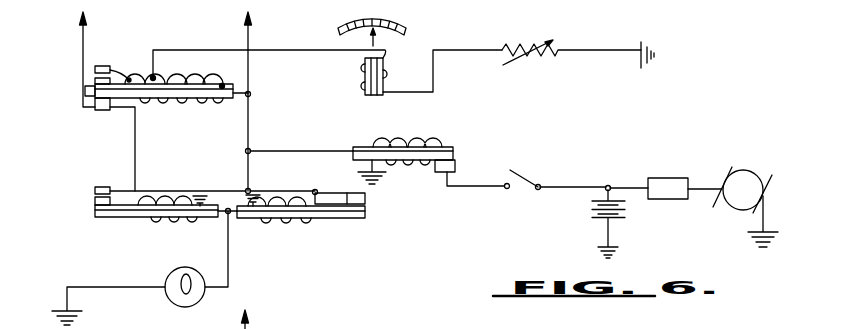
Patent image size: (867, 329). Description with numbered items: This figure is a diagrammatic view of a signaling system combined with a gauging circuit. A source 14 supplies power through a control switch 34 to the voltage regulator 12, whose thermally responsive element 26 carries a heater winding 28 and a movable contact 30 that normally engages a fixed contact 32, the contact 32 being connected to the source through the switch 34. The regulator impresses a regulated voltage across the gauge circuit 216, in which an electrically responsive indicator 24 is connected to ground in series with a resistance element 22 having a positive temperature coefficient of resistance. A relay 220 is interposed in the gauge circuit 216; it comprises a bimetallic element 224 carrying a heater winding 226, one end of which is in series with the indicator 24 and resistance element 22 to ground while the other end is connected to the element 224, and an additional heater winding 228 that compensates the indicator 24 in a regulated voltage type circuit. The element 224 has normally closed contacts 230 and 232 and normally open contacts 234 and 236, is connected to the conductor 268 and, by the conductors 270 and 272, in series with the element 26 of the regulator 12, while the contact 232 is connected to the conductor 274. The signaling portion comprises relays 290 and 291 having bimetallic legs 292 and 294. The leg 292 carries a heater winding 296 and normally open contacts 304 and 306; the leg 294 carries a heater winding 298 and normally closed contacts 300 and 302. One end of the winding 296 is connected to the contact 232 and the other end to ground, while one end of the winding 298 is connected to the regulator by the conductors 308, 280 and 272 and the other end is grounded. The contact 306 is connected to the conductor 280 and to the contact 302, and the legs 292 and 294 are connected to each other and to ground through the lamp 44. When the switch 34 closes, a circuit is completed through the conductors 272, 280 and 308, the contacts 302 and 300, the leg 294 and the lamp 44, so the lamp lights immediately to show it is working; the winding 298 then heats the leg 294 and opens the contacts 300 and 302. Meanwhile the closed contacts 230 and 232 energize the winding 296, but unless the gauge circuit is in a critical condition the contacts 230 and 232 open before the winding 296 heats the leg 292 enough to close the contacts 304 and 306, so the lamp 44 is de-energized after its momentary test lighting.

The conductor 274 is at (85, 38).
The conductor 268 is at (250, 47).
The additional heater winding 228 is at (153, 76).
The normally open contact 236 is at (114, 61).
The normally open contact 234 is at (95, 82).
The normally closed contact 230 is at (95, 92).
The normally closed contact 232 is at (95, 104).
The bimetallic element 224 is at (216, 100).
The relay 220 is at (169, 106).
The heater winding 226 is at (219, 84).
The conductor 270 is at (250, 118).
The conductor 272 is at (280, 150).
The conductor 280 is at (247, 170).
The conductor 308 is at (279, 191).
The normally open contact 306 is at (95, 190).
The normally open contact 304 is at (95, 201).
The bimetallic leg 292 is at (108, 217).
The relay 290 is at (147, 225).
The heater winding 296 is at (170, 224).
The heater winding 298 is at (231, 247).
The lamp 44 is at (190, 306).
The normally closed contact 300 is at (365, 213).
The relay 291 is at (304, 229).
The bimetallic leg 294 is at (328, 220).
The normally closed contact 302 is at (365, 198).
The voltage regulator 12 is at (407, 151).
The thermally responsive element 26 is at (420, 166).
The heater winding 28 is at (425, 141).
The movable contact 30 is at (458, 165).
The fixed contact 32 is at (520, 176).
The control switch 34 is at (545, 182).
The source 14 is at (664, 178).
The electrically responsive indicator 24 is at (406, 35).
The gauge circuit 216 is at (455, 53).
The resistance element 22 is at (527, 43).